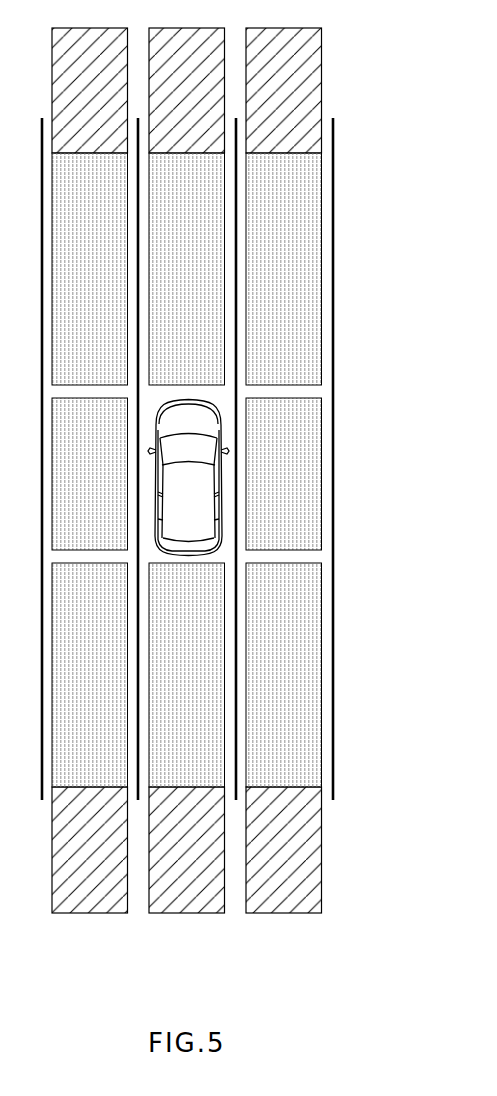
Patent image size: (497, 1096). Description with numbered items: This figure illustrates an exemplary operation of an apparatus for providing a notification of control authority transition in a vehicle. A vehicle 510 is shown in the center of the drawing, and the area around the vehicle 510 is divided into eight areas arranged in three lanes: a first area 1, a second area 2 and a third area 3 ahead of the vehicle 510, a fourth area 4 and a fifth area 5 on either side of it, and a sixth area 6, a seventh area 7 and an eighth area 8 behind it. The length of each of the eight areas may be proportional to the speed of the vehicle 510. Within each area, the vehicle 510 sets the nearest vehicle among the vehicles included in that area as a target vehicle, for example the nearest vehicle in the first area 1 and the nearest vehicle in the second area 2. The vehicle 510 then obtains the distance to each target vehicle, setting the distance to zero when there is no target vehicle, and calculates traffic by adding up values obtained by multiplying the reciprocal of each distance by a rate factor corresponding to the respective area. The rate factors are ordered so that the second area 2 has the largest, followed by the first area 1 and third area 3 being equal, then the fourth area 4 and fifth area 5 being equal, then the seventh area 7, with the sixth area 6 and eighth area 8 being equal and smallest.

The vehicle 510 is at (222, 505).
The 1st area 1 is at (90, 269).
The 2nd area 2 is at (187, 269).
The 3rd area 3 is at (284, 269).
The 4th area 4 is at (90, 474).
The 5th area 5 is at (284, 474).
The 6th area 6 is at (90, 675).
The 7th area 7 is at (187, 675).
The 8th area 8 is at (284, 675).